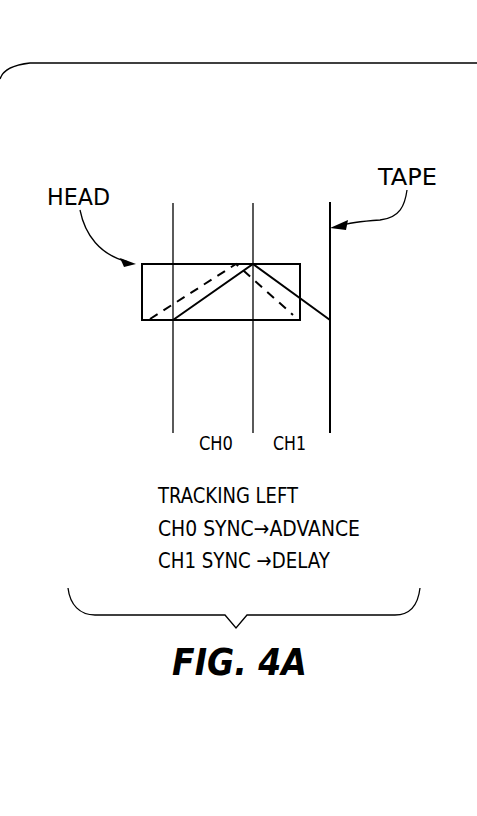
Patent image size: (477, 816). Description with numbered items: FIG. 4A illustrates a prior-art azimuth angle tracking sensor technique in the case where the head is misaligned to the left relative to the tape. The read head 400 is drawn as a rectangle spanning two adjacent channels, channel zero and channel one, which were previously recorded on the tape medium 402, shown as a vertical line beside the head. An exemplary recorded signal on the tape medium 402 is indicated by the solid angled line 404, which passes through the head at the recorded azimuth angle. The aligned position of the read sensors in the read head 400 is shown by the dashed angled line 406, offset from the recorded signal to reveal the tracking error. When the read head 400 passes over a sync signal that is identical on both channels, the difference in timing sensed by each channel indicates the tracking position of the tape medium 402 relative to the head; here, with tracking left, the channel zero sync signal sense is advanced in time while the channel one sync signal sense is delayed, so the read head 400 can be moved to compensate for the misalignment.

The read head 400 is at (142, 284).
The tape medium 402 is at (330, 348).
The angled line 404 is at (307, 304).
The dashed angled line 406 is at (162, 308).